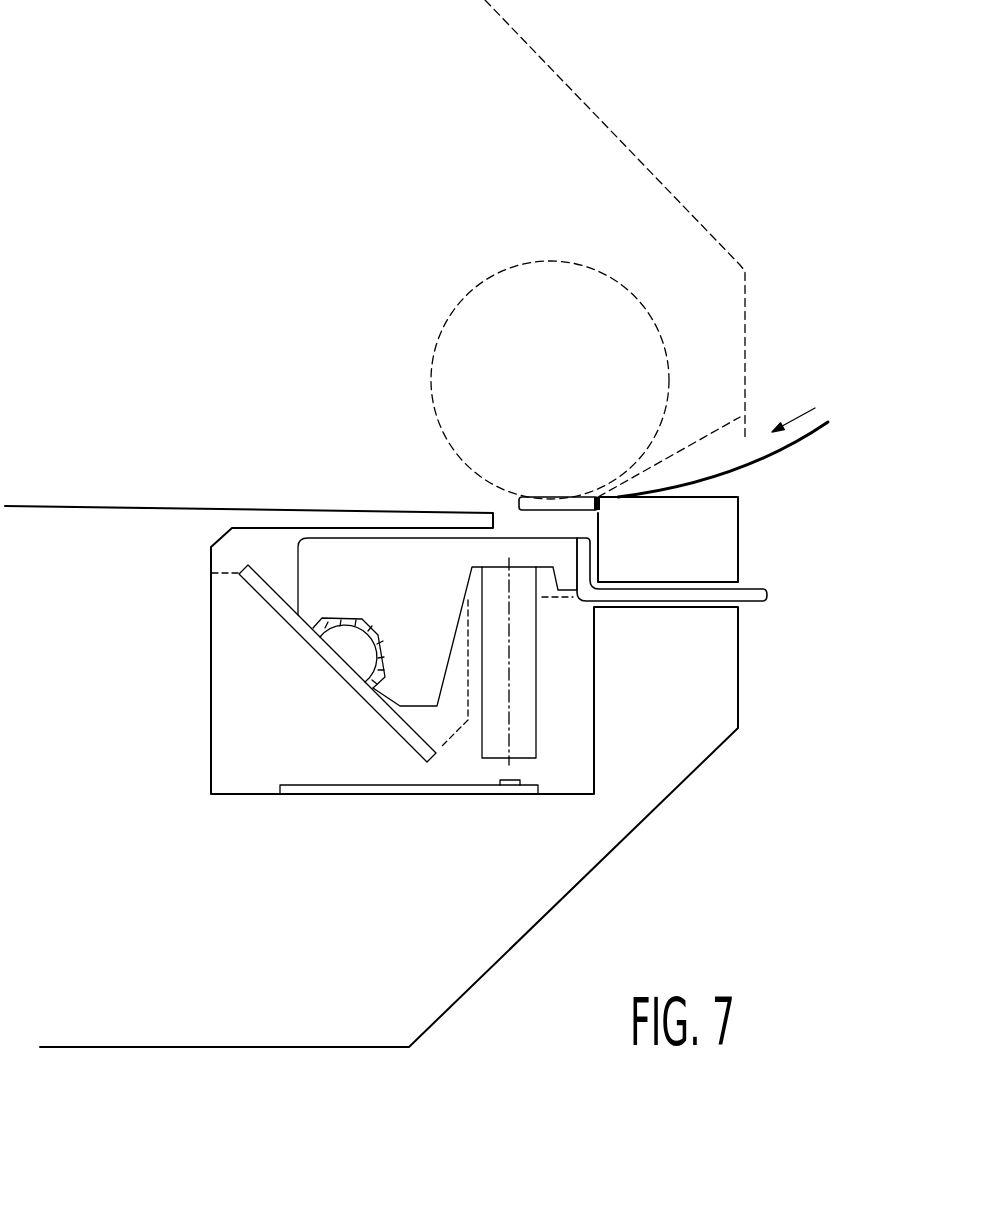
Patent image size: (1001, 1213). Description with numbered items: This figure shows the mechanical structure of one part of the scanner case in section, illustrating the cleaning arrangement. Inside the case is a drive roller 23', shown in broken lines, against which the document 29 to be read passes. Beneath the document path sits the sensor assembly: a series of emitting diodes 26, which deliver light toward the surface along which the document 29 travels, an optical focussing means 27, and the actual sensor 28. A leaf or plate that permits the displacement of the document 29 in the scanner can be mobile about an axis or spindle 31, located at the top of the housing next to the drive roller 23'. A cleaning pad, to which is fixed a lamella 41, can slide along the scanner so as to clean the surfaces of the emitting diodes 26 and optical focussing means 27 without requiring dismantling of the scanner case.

The drive roller 23' is at (517, 347).
The emitting diodes 26 is at (337, 653).
The optical focussing means 27 is at (528, 743).
The actual sensor 28 is at (520, 792).
The document 29 is at (793, 443).
The axis or spindle 31 is at (597, 500).
The lamella 41 is at (762, 602).